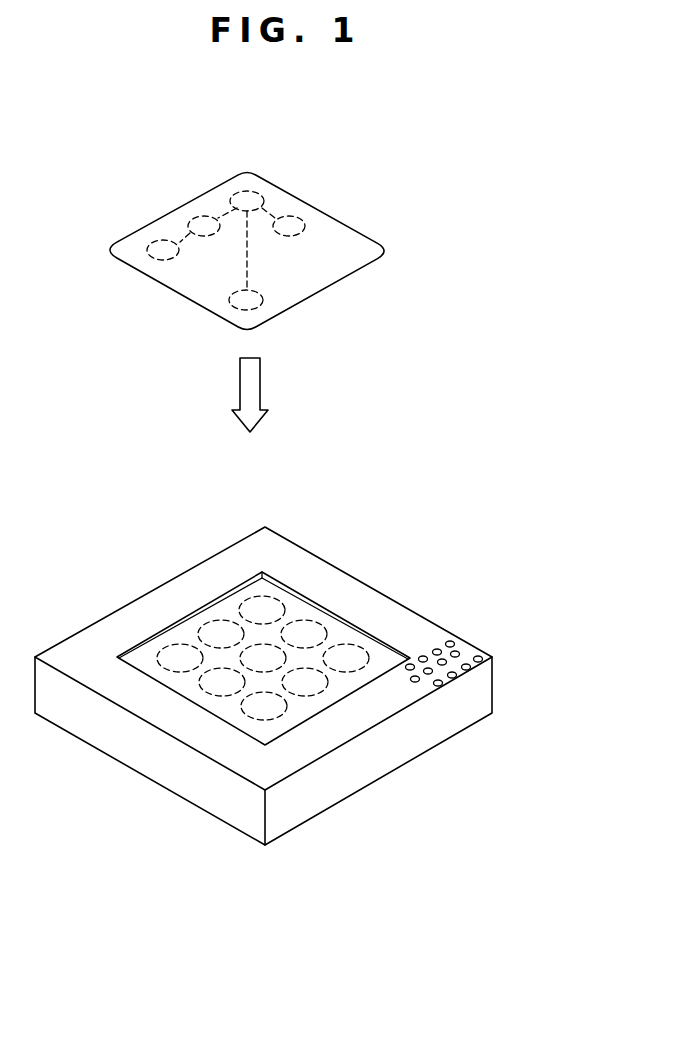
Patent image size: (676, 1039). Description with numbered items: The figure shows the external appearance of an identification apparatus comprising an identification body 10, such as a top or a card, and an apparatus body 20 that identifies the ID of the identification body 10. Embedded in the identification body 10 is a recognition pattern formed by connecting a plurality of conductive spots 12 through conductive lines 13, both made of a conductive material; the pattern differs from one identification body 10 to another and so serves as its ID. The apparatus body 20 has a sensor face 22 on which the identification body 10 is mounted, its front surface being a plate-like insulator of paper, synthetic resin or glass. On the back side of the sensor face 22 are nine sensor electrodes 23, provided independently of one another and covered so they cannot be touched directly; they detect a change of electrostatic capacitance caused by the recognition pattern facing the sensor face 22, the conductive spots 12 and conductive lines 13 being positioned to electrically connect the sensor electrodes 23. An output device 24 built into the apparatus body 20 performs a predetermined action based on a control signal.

The identification body 10 is at (367, 218).
The conductive spots 12 is at (248, 192).
The conductive lines 13 is at (247, 252).
The apparatus body 20 is at (375, 558).
The sensor face 22 is at (185, 638).
The sensor electrodes 23 is at (290, 713).
The output device 24 is at (457, 653).